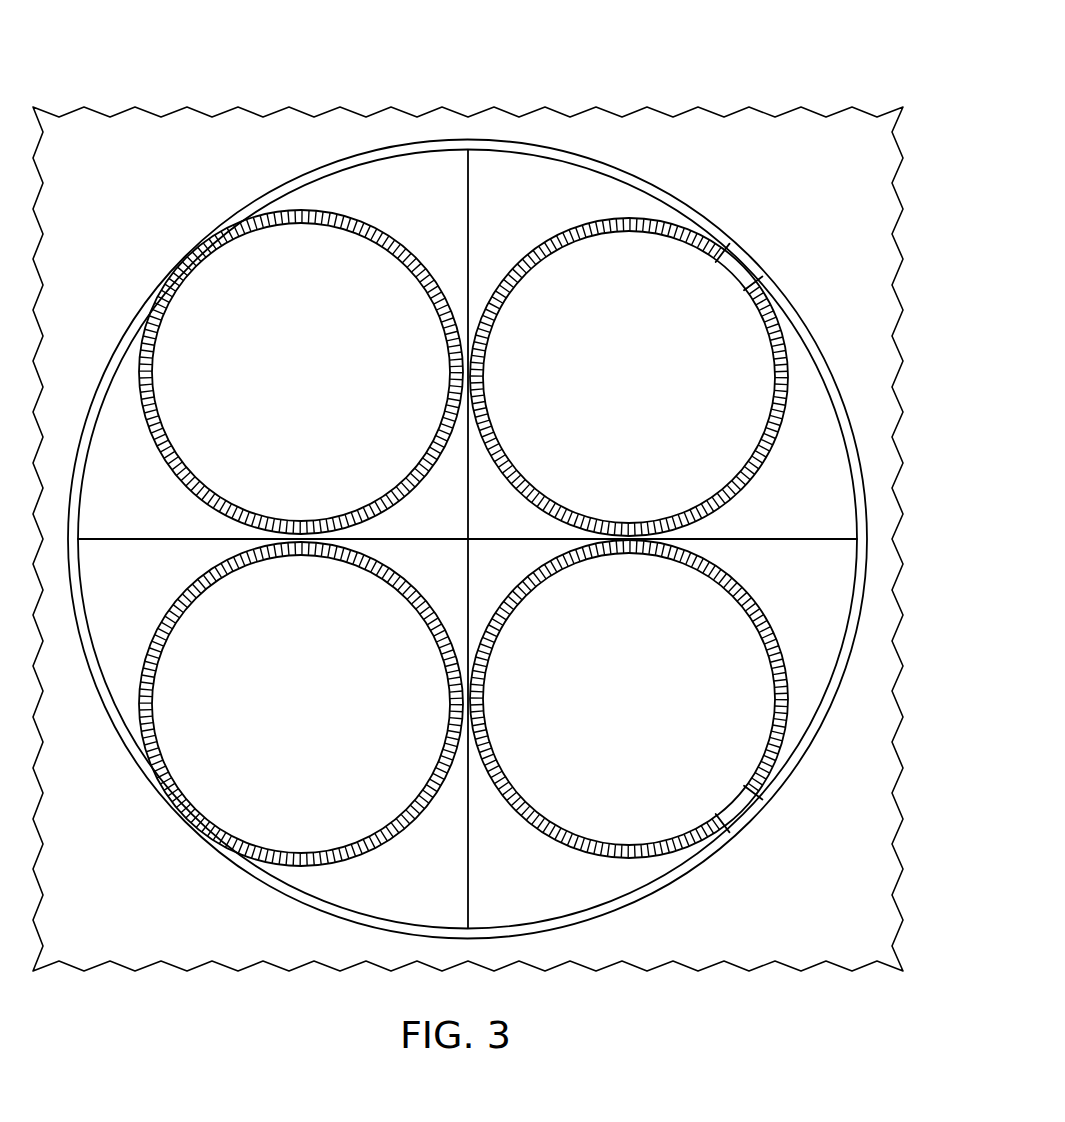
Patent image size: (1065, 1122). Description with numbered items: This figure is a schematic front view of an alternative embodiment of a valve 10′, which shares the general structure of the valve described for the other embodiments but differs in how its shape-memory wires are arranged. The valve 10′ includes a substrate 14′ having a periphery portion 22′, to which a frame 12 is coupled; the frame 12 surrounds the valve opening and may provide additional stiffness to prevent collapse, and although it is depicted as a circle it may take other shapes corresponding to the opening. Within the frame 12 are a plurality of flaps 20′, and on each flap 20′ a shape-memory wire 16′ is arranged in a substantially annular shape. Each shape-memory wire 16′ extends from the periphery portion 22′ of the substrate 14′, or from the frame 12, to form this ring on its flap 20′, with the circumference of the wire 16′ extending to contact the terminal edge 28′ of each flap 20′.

The valve 10′ is at (467, 488).
The frame 12 is at (540, 141).
The substrate 14′ is at (468, 488).
The shape-memory wire 16′ is at (386, 232).
The flap 20′ is at (192, 270).
The periphery portion 22′ is at (184, 124).
The terminal edge 28′ is at (388, 536).